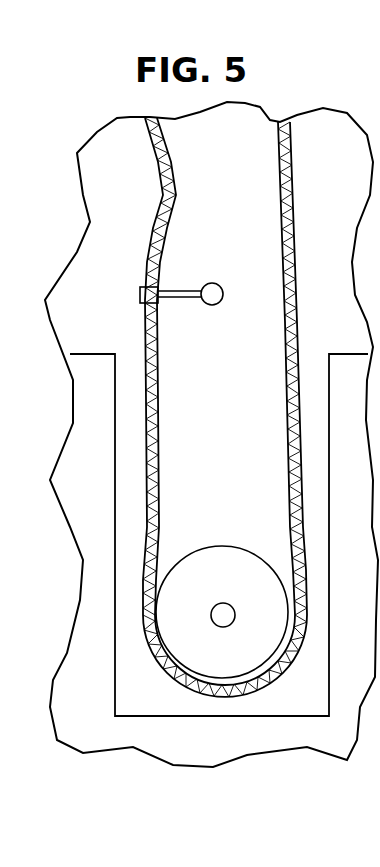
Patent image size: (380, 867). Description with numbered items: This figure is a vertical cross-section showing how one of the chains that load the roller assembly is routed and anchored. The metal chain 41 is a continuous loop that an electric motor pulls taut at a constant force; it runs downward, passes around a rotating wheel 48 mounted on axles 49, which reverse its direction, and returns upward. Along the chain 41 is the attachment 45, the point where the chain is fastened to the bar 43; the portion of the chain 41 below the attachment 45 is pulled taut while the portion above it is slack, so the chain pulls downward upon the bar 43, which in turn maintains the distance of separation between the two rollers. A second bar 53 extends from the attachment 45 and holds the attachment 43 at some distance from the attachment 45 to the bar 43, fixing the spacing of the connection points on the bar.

The metal chain 41 is at (158, 443).
The bar 43 is at (216, 283).
The attachment 45 is at (140, 295).
The rotating wheel 48 is at (219, 546).
The axle 49 is at (233, 606).
The bar 53 is at (188, 300).